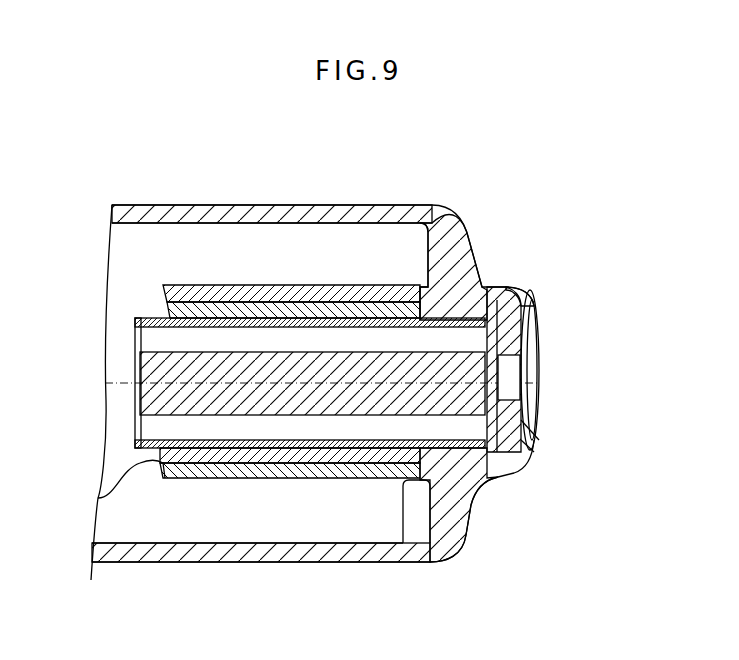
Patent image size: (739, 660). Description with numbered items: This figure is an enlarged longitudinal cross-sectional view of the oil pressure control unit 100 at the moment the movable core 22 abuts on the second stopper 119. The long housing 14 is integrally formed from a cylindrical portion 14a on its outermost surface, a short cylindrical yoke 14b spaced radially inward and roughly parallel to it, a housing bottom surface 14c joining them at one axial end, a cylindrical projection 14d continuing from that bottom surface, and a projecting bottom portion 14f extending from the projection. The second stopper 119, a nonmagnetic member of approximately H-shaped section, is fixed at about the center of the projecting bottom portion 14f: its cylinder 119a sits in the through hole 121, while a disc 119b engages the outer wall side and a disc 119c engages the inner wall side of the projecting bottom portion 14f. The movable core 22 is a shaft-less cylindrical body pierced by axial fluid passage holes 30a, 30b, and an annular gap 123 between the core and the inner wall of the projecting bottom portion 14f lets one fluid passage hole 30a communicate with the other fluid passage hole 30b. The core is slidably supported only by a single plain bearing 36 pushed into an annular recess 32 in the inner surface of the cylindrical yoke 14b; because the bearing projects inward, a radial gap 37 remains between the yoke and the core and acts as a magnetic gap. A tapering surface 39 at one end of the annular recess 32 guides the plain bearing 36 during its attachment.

The oil pressure control unit 100 is at (474, 207).
The housing 14 is at (224, 203).
The cylindrical portion 14a is at (178, 205).
The cylindrical yoke 14b is at (336, 285).
The housing bottom surface 14c is at (476, 250).
The cylindrical projection 14d is at (503, 286).
The projecting bottom portion 14f is at (535, 333).
The annular gap 123 is at (523, 307).
The through hole 121 is at (512, 358).
The second stopper 119 is at (540, 360).
The cylinder 119a is at (522, 430).
The disc 119b is at (543, 392).
The disc 119c is at (530, 443).
The fluid passage hole 30a is at (135, 322).
The movable core 22 is at (135, 400).
The fluid passage hole 30b is at (138, 435).
The plain bearing 36 is at (244, 470).
The annular recess 32 is at (316, 470).
The gap 37 is at (404, 530).
The tapering surface 39 is at (98, 500).